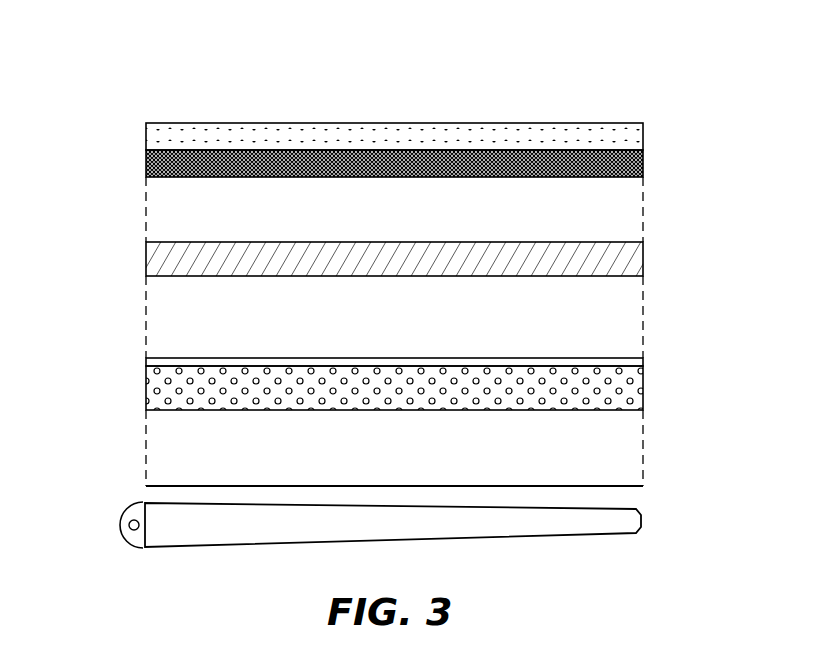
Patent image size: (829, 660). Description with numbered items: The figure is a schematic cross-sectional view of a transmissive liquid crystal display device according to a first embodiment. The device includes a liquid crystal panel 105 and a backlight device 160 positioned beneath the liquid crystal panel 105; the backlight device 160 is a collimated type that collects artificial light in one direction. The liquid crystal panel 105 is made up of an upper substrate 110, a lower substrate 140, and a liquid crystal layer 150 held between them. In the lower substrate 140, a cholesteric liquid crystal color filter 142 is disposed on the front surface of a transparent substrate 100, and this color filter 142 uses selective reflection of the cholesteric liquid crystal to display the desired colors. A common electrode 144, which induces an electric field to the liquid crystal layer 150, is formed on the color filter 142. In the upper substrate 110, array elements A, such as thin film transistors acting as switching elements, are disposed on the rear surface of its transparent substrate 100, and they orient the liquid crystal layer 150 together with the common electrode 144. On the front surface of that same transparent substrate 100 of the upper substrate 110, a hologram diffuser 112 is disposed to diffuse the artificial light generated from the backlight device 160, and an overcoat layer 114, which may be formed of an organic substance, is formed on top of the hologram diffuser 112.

The liquid crystal panel 105 is at (630, 108).
The upper substrate 110 is at (660, 130).
The hologram diffuser 112 is at (148, 154).
The overcoat layer 114 is at (156, 132).
The transparent substrate 100 is at (418, 222).
The array elements A is at (147, 256).
The liquid crystal layer 150 is at (660, 282).
The lower substrate 140 is at (660, 360).
The cholesteric liquid crystal color filter 142 is at (150, 386).
The common electrode 144 is at (150, 358).
The backlight device 160 is at (646, 509).